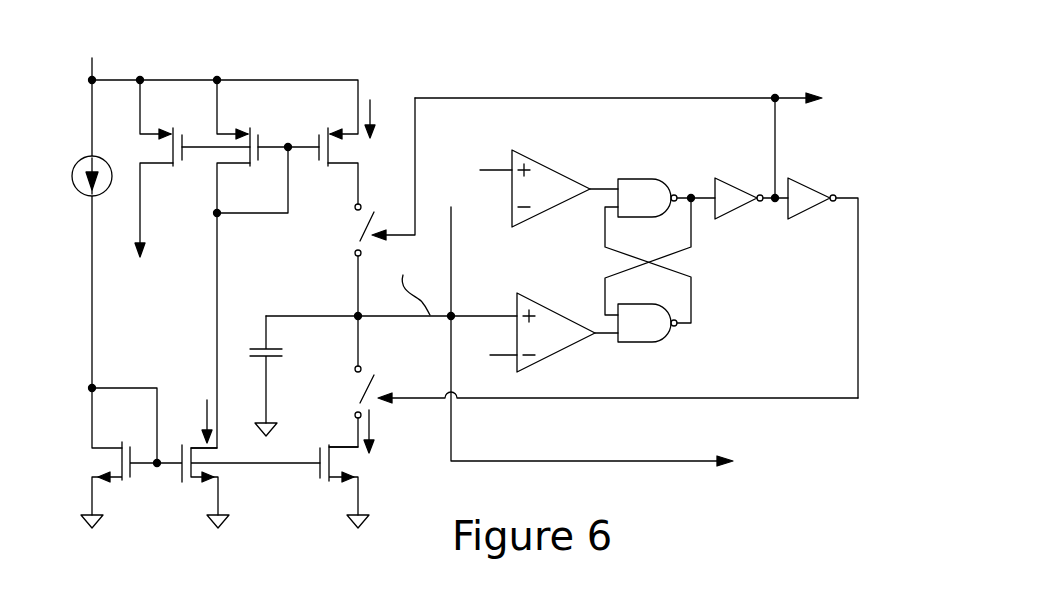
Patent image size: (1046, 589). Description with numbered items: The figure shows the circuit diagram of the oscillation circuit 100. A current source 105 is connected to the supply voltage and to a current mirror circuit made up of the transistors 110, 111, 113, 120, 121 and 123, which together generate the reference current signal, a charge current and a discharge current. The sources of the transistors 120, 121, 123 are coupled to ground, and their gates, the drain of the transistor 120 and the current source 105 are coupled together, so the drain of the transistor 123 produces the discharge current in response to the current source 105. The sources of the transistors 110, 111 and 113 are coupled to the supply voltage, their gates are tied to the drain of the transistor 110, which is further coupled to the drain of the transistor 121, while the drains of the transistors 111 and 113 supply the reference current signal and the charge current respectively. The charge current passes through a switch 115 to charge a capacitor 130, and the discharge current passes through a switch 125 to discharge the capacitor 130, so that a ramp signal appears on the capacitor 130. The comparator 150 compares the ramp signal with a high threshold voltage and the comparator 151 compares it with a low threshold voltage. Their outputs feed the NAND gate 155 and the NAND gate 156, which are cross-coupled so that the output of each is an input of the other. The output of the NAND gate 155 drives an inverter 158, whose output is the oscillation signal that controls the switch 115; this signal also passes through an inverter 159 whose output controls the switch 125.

The oscillation circuit 100 is at (874, 38).
The current source 105 is at (74, 163).
The transistor 110 is at (265, 140).
The transistor 111 is at (171, 146).
The transistor 113 is at (330, 150).
The switch 115 is at (360, 228).
The transistor 120 is at (122, 460).
The transistor 121 is at (183, 477).
The transistor 123 is at (335, 462).
The switch 125 is at (367, 395).
The capacitor 130 is at (252, 347).
The comparator 150 is at (532, 157).
The comparator 151 is at (540, 303).
The NAND gate 155 is at (626, 178).
The NAND gate 156 is at (652, 343).
The inverter 158 is at (737, 207).
The inverter 159 is at (817, 206).